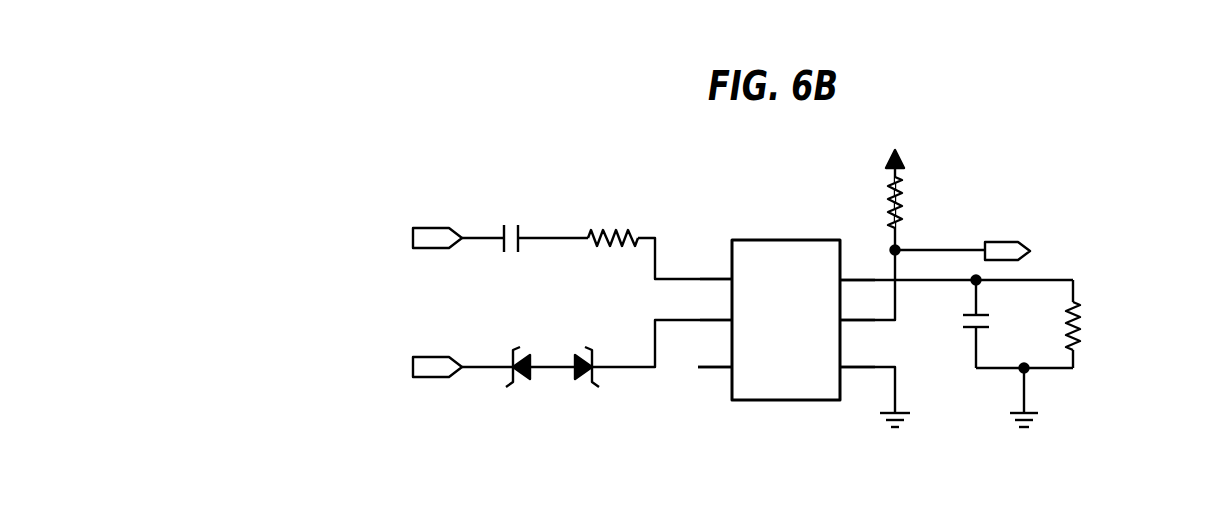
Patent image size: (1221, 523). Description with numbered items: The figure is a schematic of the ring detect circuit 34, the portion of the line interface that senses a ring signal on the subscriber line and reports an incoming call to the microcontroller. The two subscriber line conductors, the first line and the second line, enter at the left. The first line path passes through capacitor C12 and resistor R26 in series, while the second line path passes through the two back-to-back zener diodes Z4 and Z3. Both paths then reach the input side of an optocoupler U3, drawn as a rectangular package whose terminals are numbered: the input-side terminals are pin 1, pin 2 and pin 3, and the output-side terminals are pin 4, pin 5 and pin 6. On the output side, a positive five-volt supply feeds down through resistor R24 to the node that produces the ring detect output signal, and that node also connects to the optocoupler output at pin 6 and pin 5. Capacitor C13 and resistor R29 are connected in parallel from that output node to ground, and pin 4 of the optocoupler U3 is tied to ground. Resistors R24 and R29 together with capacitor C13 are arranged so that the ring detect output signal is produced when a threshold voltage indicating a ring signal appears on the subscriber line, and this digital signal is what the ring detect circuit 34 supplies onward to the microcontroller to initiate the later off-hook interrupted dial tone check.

The ring detect circuit 34 is at (983, 181).
The capacitor C12 is at (514, 222).
The resistor R26 is at (613, 219).
The zener diode Z4 is at (523, 352).
The zener diode Z3 is at (582, 352).
The optocoupler U3 is at (786, 301).
The resistor R24 is at (921, 202).
The resistor R29 is at (1098, 326).
The capacitor C13 is at (957, 339).
The U3 pin 1 is at (716, 261).
The U3 pin 2 is at (716, 302).
The U3 pin 3 is at (715, 348).
The U3 pin 4 is at (857, 348).
The U3 pin 5 is at (857, 302).
The telephone line 6 is at (857, 261).